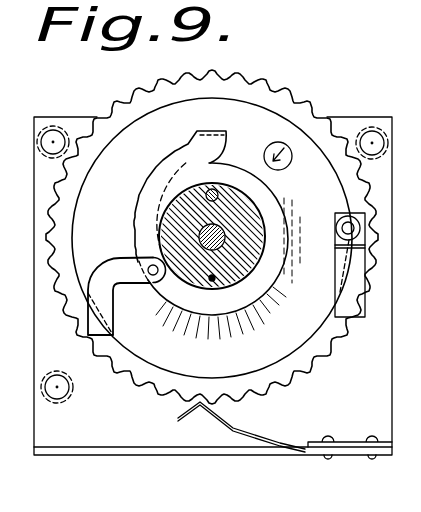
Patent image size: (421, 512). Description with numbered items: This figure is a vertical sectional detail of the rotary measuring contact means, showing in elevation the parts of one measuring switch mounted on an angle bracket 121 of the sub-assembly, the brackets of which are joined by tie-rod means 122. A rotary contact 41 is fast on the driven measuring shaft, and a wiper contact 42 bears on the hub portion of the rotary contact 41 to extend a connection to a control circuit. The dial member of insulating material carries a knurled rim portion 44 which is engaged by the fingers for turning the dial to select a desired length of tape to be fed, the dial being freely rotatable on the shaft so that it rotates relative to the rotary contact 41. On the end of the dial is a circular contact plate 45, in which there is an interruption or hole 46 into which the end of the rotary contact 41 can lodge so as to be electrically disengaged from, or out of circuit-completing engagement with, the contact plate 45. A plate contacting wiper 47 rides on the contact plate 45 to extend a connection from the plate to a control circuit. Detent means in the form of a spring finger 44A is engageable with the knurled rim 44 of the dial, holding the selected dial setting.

The rotary contact 41 is at (193, 142).
The wiper contact 42 is at (121, 257).
The knurled rim portion 44 is at (155, 396).
The spring finger 44A is at (185, 419).
The circular contact plate 45 is at (113, 212).
The hole 46 is at (279, 142).
The plate contacting wiper 47 is at (344, 295).
The angle bracket 121 is at (352, 411).
The tie-rod means 122 is at (396, 103).